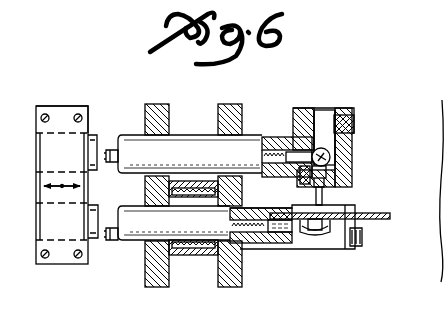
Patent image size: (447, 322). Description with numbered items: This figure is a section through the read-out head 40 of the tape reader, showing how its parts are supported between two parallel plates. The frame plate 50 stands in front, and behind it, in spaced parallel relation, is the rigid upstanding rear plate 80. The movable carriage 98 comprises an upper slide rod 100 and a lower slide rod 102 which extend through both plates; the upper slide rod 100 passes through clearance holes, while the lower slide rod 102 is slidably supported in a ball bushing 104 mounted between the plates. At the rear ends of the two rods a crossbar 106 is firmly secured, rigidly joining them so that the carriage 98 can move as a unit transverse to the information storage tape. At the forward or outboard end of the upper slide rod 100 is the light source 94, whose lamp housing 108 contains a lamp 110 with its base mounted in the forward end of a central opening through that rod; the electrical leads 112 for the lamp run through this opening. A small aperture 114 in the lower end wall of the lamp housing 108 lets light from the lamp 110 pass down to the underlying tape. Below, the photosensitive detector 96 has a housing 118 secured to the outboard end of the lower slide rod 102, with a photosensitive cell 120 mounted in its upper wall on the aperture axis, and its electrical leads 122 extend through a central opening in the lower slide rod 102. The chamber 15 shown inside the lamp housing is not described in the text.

The chamber 15 is at (325, 118).
The read-out head 40 is at (372, 88).
The frame plate 50 is at (242, 105).
The upstanding plate 80 is at (167, 105).
The light source 94 is at (357, 147).
The photosensitive pick-up or detector 96 is at (361, 240).
The movable carriage 98 is at (55, 268).
The upper slide rod 100 is at (190, 154).
The lower slide rod 102 is at (174, 223).
The ball bushing 104 is at (232, 173).
The crossbar 106 is at (88, 106).
The lamp housing 108 is at (355, 122).
The lamp 110 is at (331, 158).
The electrical leads 112 is at (118, 160).
The aperture 114 is at (345, 176).
The housing 118 is at (356, 218).
The photosensitive cell 120 is at (320, 222).
The electrical leads 122 is at (118, 238).